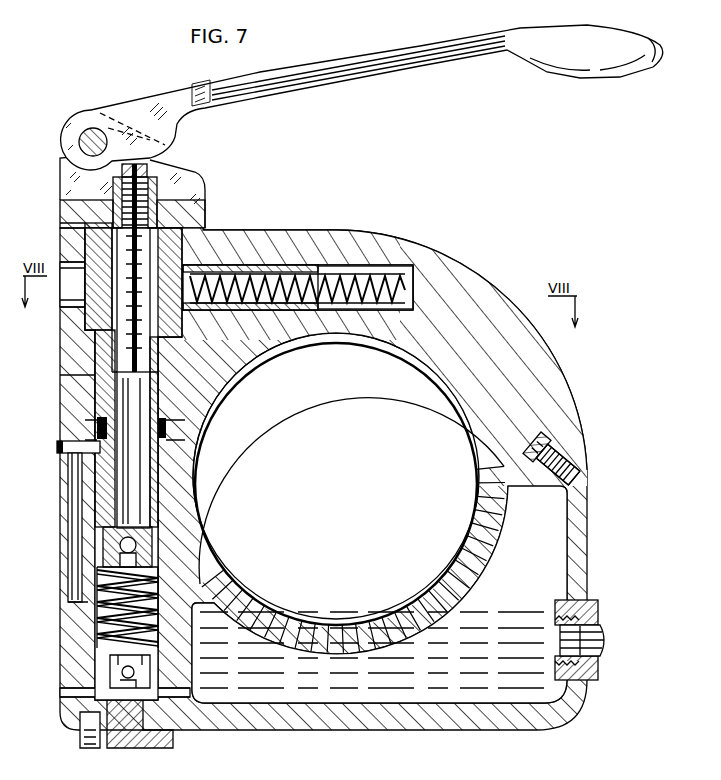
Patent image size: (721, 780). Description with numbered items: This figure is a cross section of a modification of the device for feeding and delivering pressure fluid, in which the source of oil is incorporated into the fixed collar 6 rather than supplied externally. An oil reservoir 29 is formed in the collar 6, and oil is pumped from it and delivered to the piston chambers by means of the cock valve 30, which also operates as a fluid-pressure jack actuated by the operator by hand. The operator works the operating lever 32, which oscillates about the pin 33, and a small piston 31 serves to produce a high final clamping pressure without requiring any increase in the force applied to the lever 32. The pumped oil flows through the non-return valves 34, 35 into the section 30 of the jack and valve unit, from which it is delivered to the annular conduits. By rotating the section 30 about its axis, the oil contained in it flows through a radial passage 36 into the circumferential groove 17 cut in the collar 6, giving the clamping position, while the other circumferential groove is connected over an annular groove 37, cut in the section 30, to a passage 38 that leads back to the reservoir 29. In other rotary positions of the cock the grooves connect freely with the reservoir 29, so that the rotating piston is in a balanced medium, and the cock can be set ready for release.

The fixed collar 6 is at (325, 238).
The annular circumferential groove 17 is at (207, 422).
The oil reservoir 29 is at (515, 698).
The cock valve 30 is at (108, 380).
The small piston 31 is at (132, 250).
The operating lever 32 is at (467, 50).
The pin 33 is at (82, 131).
The non-return valve 34 is at (120, 670).
The non-return valve 35 is at (108, 548).
The radial passage 36 is at (135, 440).
The annular groove 37 is at (100, 420).
The passage 38 is at (75, 478).